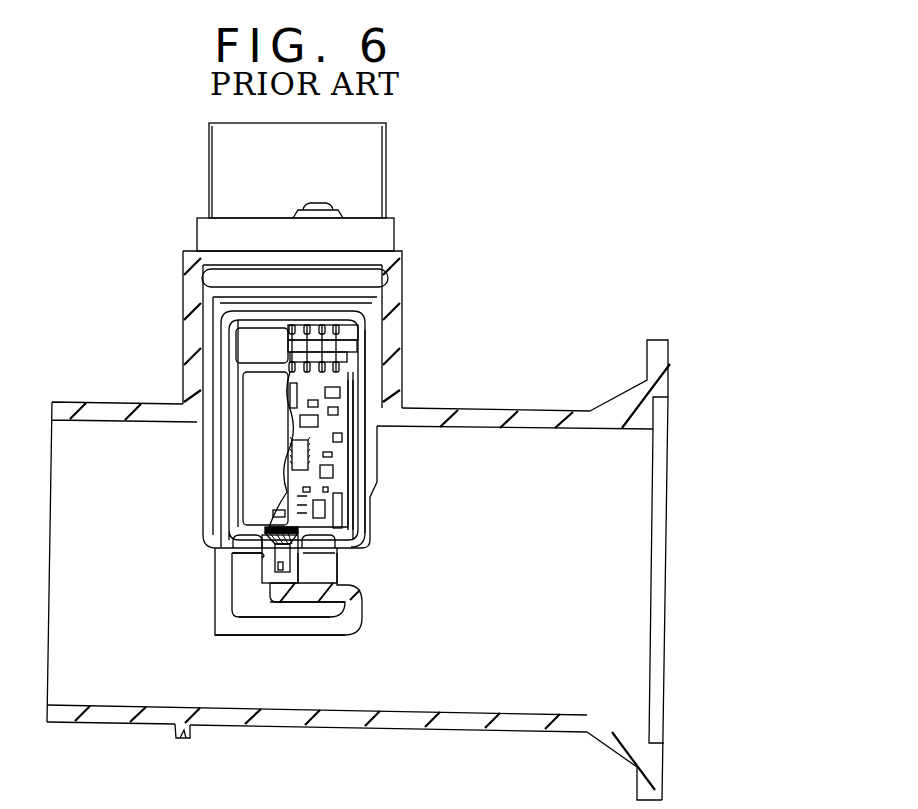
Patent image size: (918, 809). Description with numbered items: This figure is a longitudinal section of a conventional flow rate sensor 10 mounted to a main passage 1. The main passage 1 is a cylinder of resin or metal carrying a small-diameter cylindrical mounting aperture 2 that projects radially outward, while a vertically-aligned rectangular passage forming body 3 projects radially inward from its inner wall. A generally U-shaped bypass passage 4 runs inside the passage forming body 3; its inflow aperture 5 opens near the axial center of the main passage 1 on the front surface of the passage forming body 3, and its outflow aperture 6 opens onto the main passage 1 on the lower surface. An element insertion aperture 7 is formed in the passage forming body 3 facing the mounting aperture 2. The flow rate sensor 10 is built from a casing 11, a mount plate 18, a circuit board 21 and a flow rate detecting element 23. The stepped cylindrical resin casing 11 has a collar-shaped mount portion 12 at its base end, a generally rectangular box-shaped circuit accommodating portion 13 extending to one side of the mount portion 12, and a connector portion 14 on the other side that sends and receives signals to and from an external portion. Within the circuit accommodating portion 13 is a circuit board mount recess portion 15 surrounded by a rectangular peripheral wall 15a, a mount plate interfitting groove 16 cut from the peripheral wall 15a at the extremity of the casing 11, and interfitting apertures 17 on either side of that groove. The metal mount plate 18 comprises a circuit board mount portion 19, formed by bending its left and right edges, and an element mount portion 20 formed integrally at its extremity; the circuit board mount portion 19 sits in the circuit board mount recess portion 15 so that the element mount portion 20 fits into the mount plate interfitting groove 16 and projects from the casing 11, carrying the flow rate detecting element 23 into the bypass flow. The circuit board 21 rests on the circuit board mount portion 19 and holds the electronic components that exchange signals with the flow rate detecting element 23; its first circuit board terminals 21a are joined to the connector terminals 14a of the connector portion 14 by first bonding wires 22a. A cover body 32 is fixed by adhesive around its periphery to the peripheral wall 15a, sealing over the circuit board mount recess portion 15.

The main passage 1 is at (548, 410).
The mounting aperture 2 is at (185, 292).
The passage forming body 3 is at (213, 628).
The bypass passage 4 is at (256, 612).
The inflow aperture 5 is at (333, 578).
The outflow aperture 6 is at (327, 636).
The element insertion aperture 7 is at (276, 559).
The flow rate sensor 10 is at (186, 208).
The casing 11 is at (344, 213).
The mount portion 12 is at (390, 236).
The circuit accommodating portion 13 is at (327, 277).
The connector portion 14 is at (392, 184).
The connector terminals 14a is at (356, 325).
The circuit board mount recess portion 15 is at (362, 422).
The peripheral wall 15a is at (368, 442).
The mount plate interfitting groove 16 is at (266, 530).
The interfitting apertures 17 is at (240, 541).
The mount plate 18 is at (382, 474).
The circuit board mount portion 19 is at (352, 517).
The element mount portion 20 is at (338, 553).
The circuit board 21 is at (346, 464).
The first circuit board terminals 21a is at (338, 368).
The first bonding wires 22a is at (350, 345).
The flow rate detecting element 23 is at (270, 558).
The cover body 32 is at (250, 432).